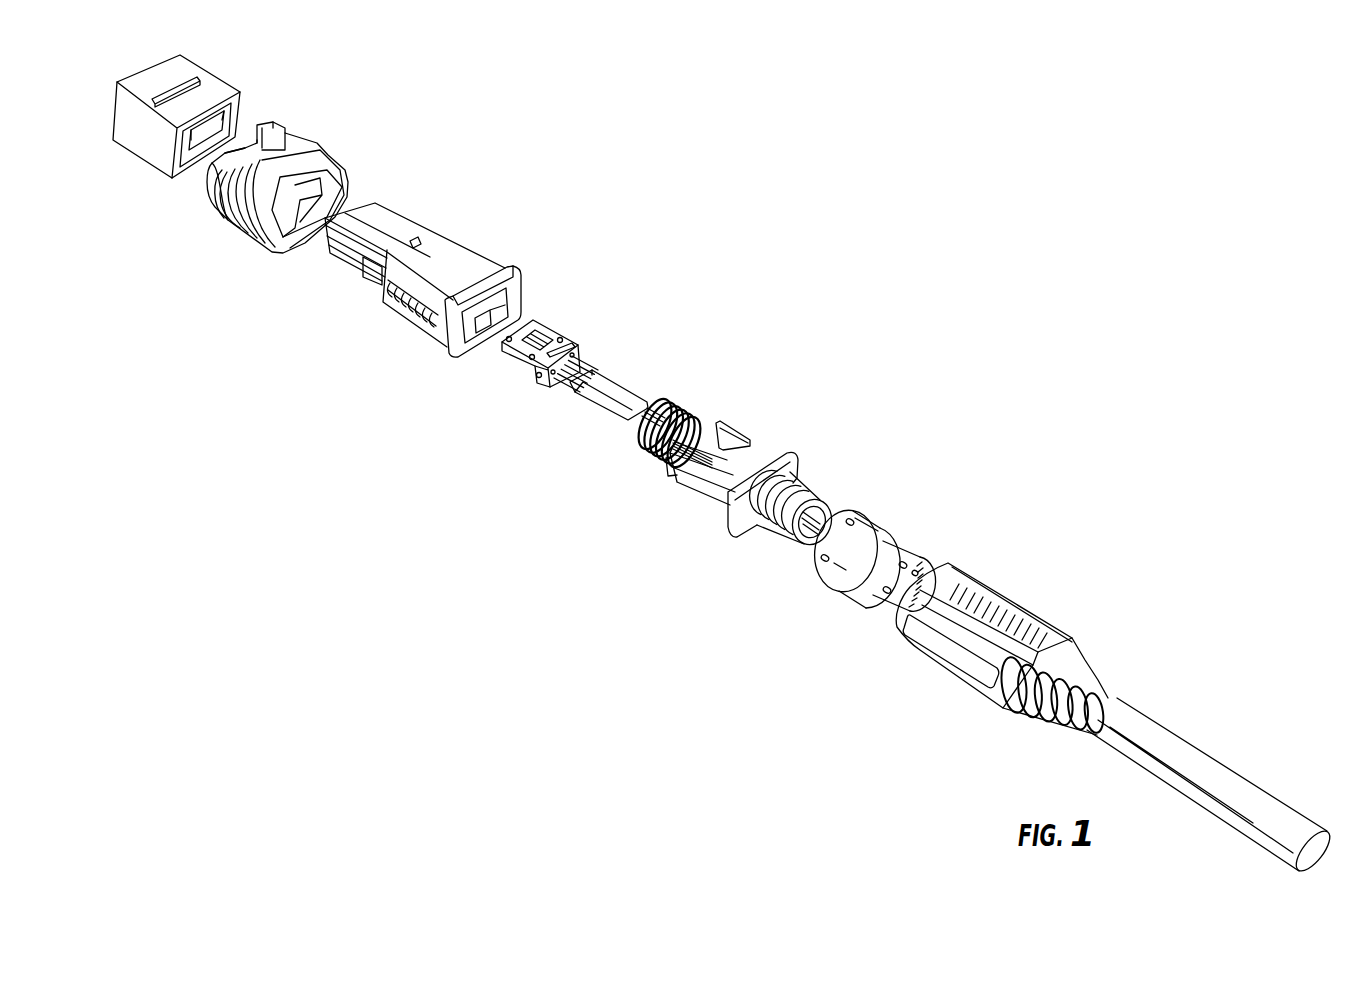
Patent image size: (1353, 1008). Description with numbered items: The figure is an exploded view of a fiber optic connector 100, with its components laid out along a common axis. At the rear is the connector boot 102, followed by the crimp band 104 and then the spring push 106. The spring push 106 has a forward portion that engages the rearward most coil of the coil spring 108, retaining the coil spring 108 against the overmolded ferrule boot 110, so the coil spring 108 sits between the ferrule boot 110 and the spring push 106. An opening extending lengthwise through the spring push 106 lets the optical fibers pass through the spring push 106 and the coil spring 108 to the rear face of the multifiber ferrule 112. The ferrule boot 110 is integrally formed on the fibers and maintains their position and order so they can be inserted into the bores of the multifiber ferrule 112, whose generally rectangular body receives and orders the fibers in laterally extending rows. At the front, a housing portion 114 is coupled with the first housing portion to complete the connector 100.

The fiber optic connector 100 is at (750, 237).
The connector boot 102 is at (930, 673).
The crimp band 104 is at (883, 511).
The spring push 106 is at (681, 519).
The coil spring 108 is at (689, 397).
The ferrule boot 110 is at (585, 411).
The multifiber ferrule 112 is at (548, 307).
The housing portion 114 is at (252, 84).